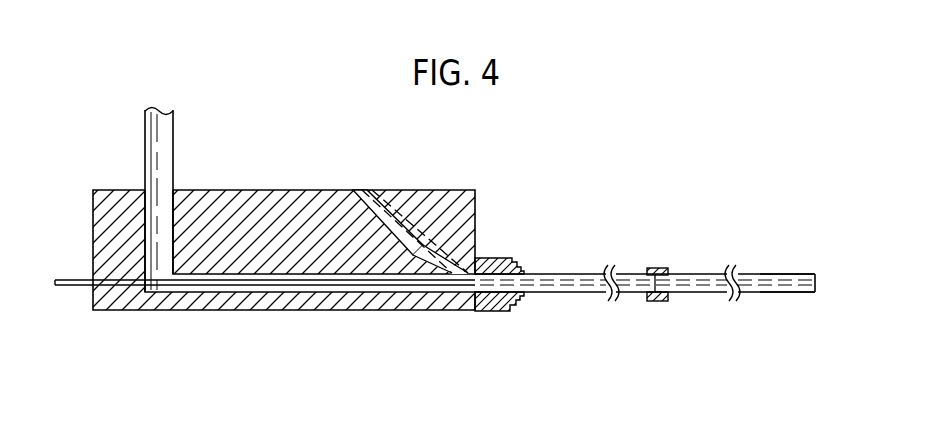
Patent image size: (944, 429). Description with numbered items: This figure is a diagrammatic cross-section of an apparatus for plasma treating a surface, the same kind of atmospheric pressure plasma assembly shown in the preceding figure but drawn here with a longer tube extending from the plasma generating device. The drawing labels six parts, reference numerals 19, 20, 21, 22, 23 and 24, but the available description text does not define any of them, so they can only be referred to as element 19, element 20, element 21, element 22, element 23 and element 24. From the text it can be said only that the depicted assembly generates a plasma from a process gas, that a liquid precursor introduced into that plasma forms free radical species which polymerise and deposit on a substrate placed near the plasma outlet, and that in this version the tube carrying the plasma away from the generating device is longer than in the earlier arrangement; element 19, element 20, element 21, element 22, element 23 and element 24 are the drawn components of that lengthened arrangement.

The sensor wire 19 is at (72, 287).
The vertical tube 20 is at (162, 112).
The inclined tube 21 is at (430, 242).
The protective tube 22 is at (552, 273).
The coupling 23 is at (647, 268).
The tube end 24 is at (813, 283).